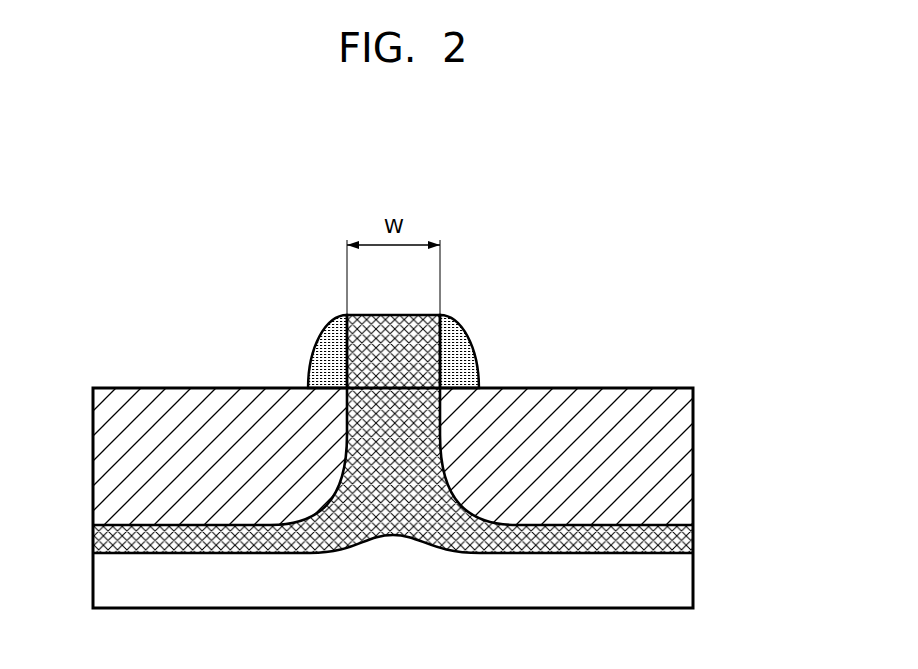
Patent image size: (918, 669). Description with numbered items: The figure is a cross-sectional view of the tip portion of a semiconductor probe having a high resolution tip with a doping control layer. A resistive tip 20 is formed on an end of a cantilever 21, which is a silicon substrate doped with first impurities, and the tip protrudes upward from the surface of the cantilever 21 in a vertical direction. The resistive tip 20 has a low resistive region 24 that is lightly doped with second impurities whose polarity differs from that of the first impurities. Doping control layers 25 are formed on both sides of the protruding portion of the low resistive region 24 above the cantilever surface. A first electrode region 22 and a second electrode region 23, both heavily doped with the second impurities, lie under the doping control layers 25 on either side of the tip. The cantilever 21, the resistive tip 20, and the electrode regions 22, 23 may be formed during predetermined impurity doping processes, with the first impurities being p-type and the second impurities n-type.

The resistive tip 20 is at (466, 316).
The cantilever 21 is at (683, 586).
The first electrode region 22 is at (105, 462).
The second electrode region 23 is at (680, 467).
The low resistive region 24 is at (510, 387).
The doping control layer 25 is at (318, 358).